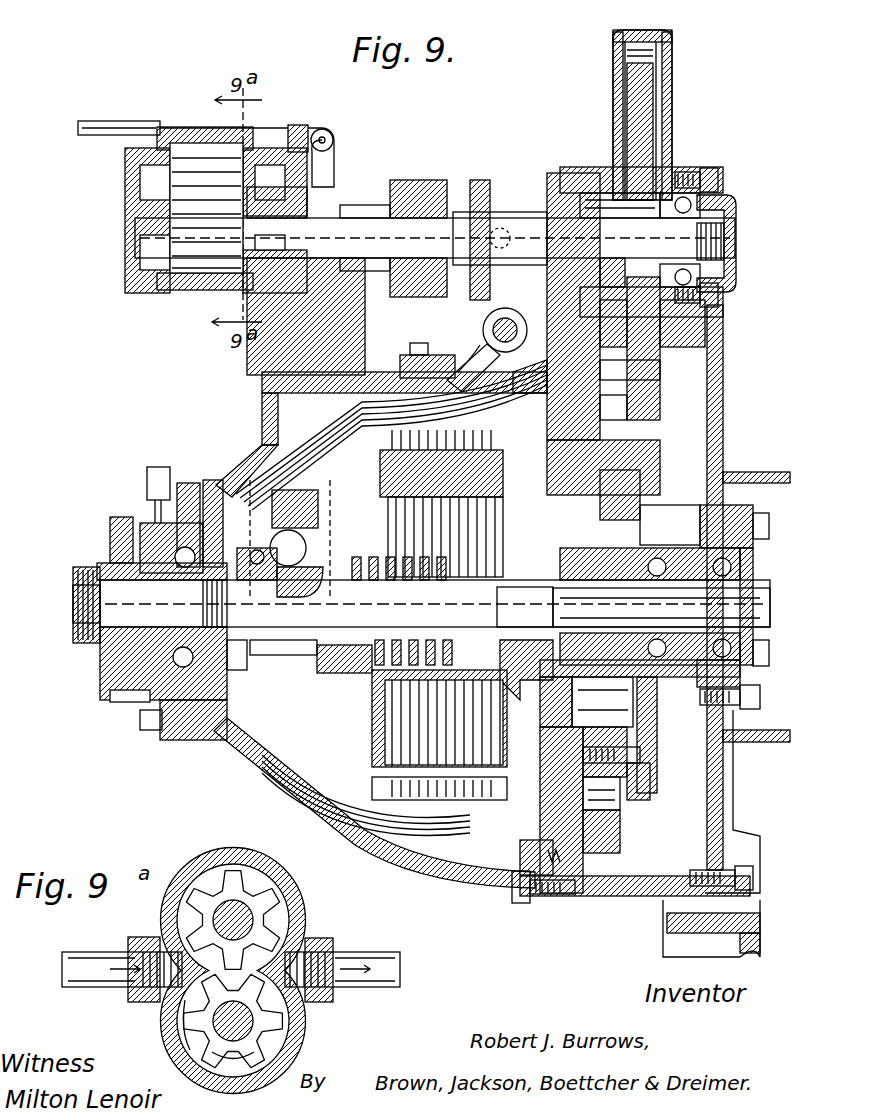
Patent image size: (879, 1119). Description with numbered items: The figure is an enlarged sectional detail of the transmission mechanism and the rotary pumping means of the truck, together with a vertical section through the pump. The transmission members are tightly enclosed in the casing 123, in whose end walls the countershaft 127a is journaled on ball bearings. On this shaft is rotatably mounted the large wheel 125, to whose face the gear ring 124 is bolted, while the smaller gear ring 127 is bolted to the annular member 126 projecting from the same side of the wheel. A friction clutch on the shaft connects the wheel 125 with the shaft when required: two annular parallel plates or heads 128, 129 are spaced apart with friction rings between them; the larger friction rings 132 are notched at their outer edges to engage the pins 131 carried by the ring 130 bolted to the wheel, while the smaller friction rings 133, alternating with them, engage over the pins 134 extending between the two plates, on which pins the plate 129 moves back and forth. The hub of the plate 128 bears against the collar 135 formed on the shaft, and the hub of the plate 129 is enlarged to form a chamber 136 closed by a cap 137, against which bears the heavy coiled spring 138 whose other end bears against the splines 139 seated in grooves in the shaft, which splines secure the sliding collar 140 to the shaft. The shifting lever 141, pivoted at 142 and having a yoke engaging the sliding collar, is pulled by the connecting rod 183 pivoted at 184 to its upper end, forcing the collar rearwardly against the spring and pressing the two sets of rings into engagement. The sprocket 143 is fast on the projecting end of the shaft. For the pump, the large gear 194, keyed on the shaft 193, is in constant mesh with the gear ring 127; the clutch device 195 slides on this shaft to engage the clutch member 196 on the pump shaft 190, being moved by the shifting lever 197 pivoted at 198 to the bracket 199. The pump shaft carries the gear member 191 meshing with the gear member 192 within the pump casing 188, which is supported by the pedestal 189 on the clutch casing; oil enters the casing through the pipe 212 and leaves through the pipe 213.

In FIG. 9, the casing 123 is at (722, 450).
In FIG. 9, the gear 124 is at (620, 900).
In FIG. 9, the wheel 125 is at (532, 858).
In FIG. 9, the annular member 126 is at (642, 510).
In FIG. 9, the gear ring 127 is at (648, 437).
In FIG. 9, the countershaft 127a is at (674, 132).
In FIG. 9, the plate or head 128 is at (510, 650).
In FIG. 9, the plate or head 129 is at (375, 712).
In FIG. 9, the ring 130 is at (475, 845).
In FIG. 9, the pins 131 is at (386, 788).
In FIG. 9, the friction rings 132 is at (395, 825).
In FIG. 9, the friction rings 133 is at (386, 740).
In FIG. 9, the pins 134 is at (383, 468).
In FIG. 9, the collar 135 is at (610, 600).
In FIG. 9, the chamber 136 is at (330, 672).
In FIG. 9, the cap 137 is at (440, 640).
In FIG. 9, the coiled spring 138 is at (397, 640).
In FIG. 9, the spring 139 is at (378, 640).
In FIG. 9, the sliding collar 140 is at (240, 668).
In FIG. 9, the shifting lever 141 is at (350, 190).
In FIG. 9, the pivot 142 is at (262, 472).
In FIG. 9, the sprocket 143 is at (108, 668).
In FIG. 9, the connecting rod 183 is at (82, 131).
In FIG. 9, the pivot 184 is at (336, 130).
In FIG. 9, the pump casing 188 is at (180, 292).
In FIG. 9A, the pump casing 188 is at (309, 1054).
In FIG. 9, the pedestal 189 is at (283, 335).
In FIG. 9, the pump shaft 190 is at (395, 205).
In FIG. 9A, the pump shaft 190 is at (262, 1012).
In FIG. 9, the gear member 191 is at (183, 227).
In FIG. 9A, the gear member 191 is at (195, 1040).
In FIG. 9, the gear member 192 is at (205, 128).
In FIG. 9A, the gear member 192 is at (272, 924).
In FIG. 9, the shaft 193 is at (737, 212).
In FIG. 9, the large gear 194 is at (650, 108).
In FIG. 9, the clutch device 195 is at (467, 178).
In FIG. 9, the clutch member 196 is at (432, 178).
In FIG. 9, the shifting lever 197 is at (490, 312).
In FIG. 9, the pivot 198 is at (425, 343).
In FIG. 9, the bracket 199 is at (470, 350).
In FIG. 9A, the pipe 212 is at (96, 963).
In FIG. 9A, the pipe 213 is at (385, 967).